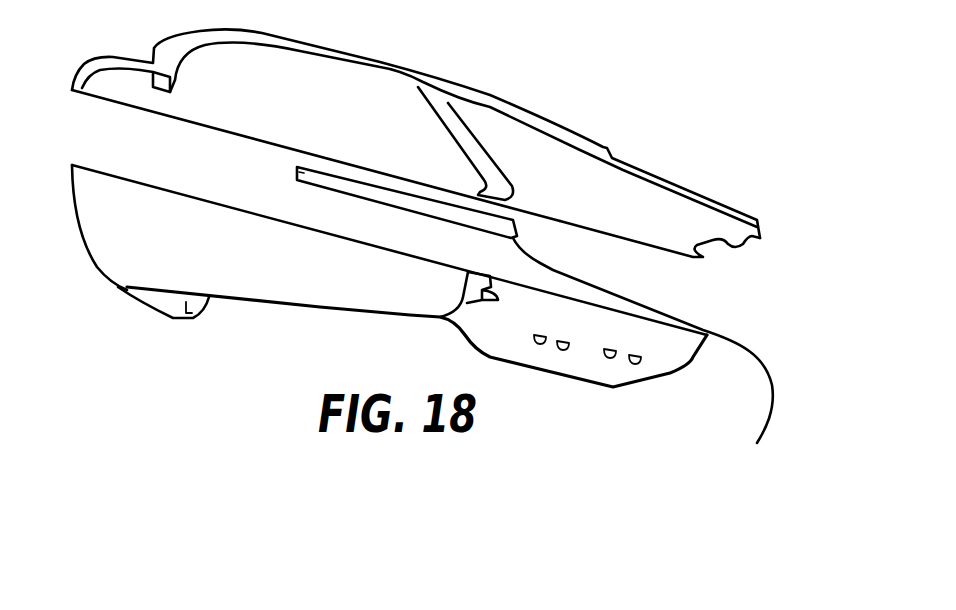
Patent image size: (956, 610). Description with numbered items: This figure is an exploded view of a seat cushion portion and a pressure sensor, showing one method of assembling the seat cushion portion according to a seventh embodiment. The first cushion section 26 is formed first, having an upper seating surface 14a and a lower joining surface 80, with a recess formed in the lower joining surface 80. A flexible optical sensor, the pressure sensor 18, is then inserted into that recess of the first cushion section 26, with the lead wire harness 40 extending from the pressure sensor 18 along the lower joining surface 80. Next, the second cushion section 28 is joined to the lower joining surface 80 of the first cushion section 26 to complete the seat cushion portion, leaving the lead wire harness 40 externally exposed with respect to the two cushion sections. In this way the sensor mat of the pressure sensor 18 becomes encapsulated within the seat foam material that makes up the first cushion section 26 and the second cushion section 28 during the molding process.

The upper seating surface 14a is at (543, 110).
The first cushion section 26 is at (392, 85).
The pressure sensor 18 is at (293, 172).
The lower joining surface 80 is at (583, 227).
The lead wire harness 40 is at (747, 340).
The second cushion section 28 is at (282, 295).